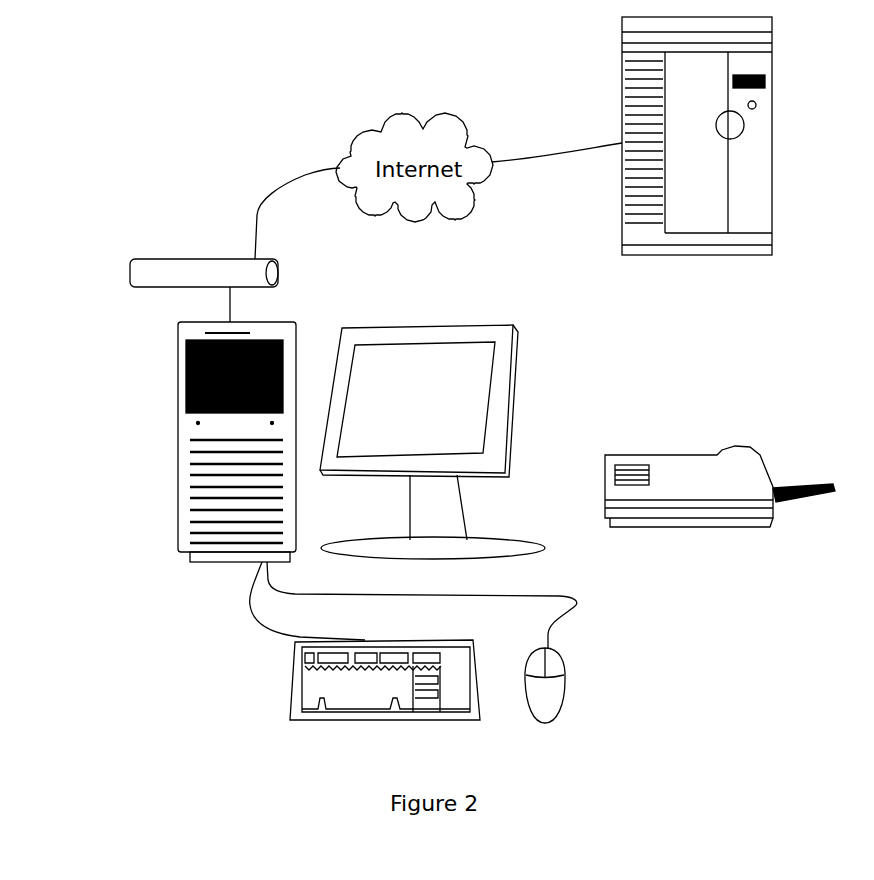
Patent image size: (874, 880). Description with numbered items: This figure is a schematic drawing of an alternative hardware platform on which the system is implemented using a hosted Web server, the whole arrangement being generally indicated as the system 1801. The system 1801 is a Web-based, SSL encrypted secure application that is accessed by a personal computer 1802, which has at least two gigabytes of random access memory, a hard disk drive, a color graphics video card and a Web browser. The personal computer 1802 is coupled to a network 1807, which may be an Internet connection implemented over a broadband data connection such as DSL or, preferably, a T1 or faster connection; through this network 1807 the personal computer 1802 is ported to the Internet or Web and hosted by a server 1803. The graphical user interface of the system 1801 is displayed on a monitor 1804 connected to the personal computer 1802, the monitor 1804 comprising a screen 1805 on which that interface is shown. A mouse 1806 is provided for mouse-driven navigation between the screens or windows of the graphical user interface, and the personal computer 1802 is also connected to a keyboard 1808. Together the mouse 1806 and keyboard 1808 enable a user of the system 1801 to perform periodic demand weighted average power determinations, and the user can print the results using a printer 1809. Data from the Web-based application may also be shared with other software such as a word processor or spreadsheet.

The system using a hosted Web server 1801 is at (278, 78).
The personal computer 1802 is at (180, 478).
The server 1803 is at (622, 70).
The monitor 1804 is at (460, 413).
The screen 1805 is at (397, 377).
The mouse 1806 is at (565, 670).
The network 1807 is at (205, 259).
The keyboard 1808 is at (292, 678).
The printer 1809 is at (697, 453).